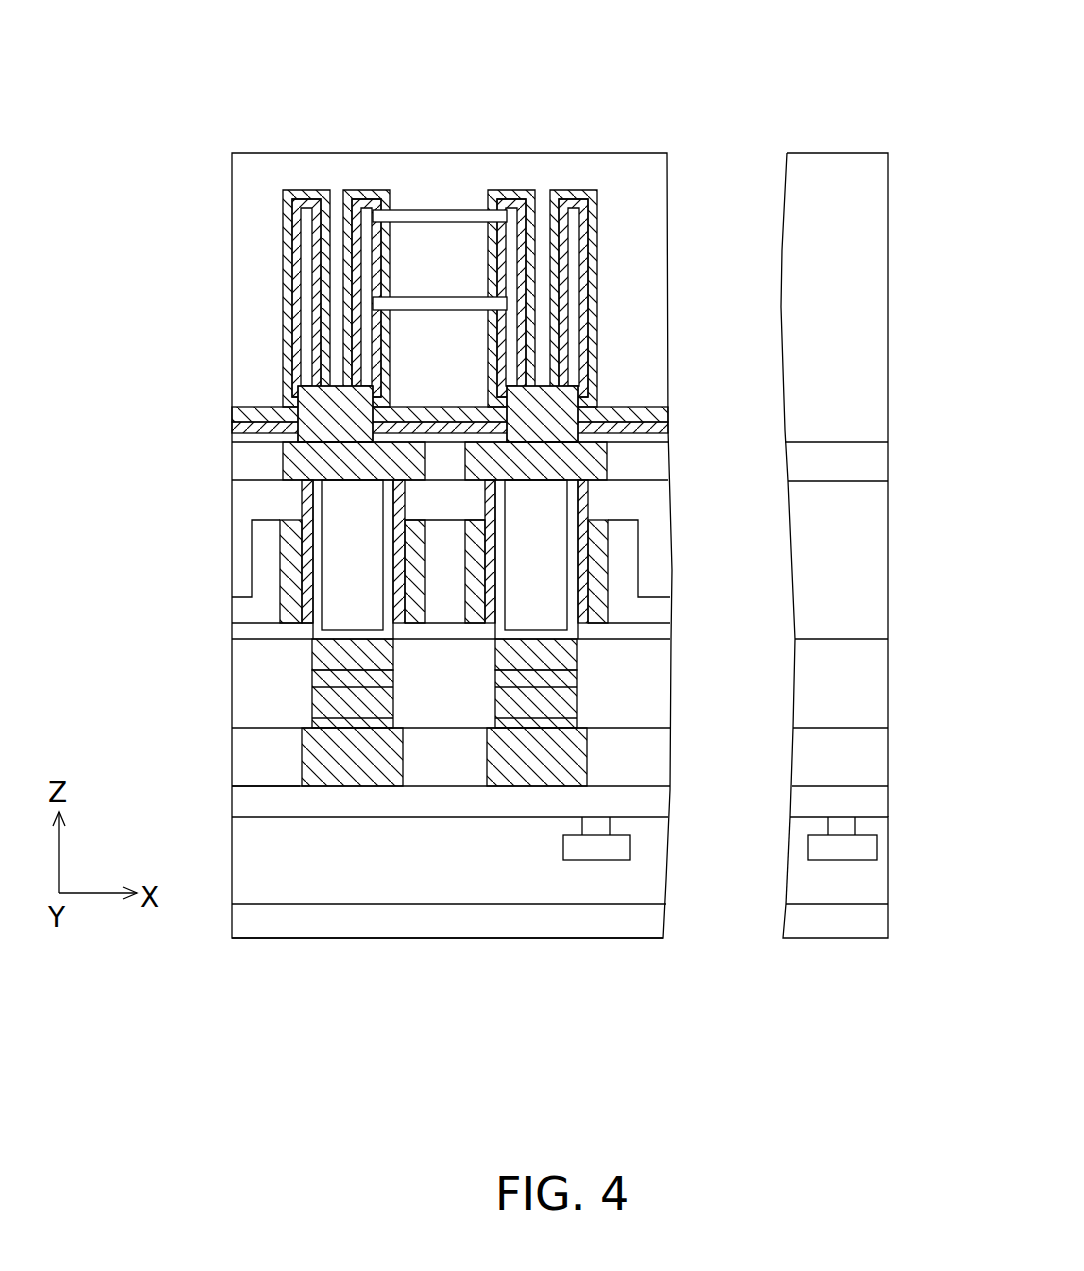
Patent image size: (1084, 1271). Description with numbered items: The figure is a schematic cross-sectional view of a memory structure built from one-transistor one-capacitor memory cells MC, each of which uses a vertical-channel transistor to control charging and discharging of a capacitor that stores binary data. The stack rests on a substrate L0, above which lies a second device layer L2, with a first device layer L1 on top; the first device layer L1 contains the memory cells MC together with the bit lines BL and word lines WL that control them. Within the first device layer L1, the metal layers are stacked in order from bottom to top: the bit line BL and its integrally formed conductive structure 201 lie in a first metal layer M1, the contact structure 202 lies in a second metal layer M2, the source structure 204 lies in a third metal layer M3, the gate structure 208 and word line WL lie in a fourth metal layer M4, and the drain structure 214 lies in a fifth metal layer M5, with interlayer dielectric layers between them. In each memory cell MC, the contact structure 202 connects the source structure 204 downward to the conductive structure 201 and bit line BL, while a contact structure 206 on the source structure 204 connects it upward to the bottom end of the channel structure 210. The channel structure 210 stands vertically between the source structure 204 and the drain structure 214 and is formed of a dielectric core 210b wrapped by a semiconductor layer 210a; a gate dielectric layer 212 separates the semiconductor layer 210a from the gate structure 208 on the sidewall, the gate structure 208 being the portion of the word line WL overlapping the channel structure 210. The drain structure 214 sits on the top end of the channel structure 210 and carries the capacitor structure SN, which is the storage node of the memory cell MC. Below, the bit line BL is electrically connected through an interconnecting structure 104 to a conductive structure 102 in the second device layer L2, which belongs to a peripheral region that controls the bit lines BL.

The memory cell MC is at (196, 98).
The capacitor structure SN is at (296, 172).
The drain structure 214 is at (302, 460).
The gate dielectric layer 212 is at (313, 512).
The channel structure 210 is at (316, 541).
The semiconductor layer 210a is at (315, 497).
The dielectric core 210b is at (338, 532).
The gate structure 208 is at (290, 570).
The word line WL is at (290, 597).
The fifth metal layer M5 is at (428, 442).
The fourth metal layer M4 is at (428, 623).
The contact structure 206 is at (328, 660).
The source structure 204 is at (327, 706).
The third metal layer M3 is at (393, 670).
The contact structure 202 is at (327, 745).
The second metal layer M2 is at (403, 728).
The conductive structure 201 is at (277, 795).
The first metal layer M1 is at (232, 786).
The interconnecting structure 104 is at (589, 829).
The conductive structure 102 is at (607, 850).
The bit line BL is at (653, 805).
The first device layer L1 is at (903, 153).
The second device layer L2 is at (903, 817).
The substrate L0 is at (903, 904).